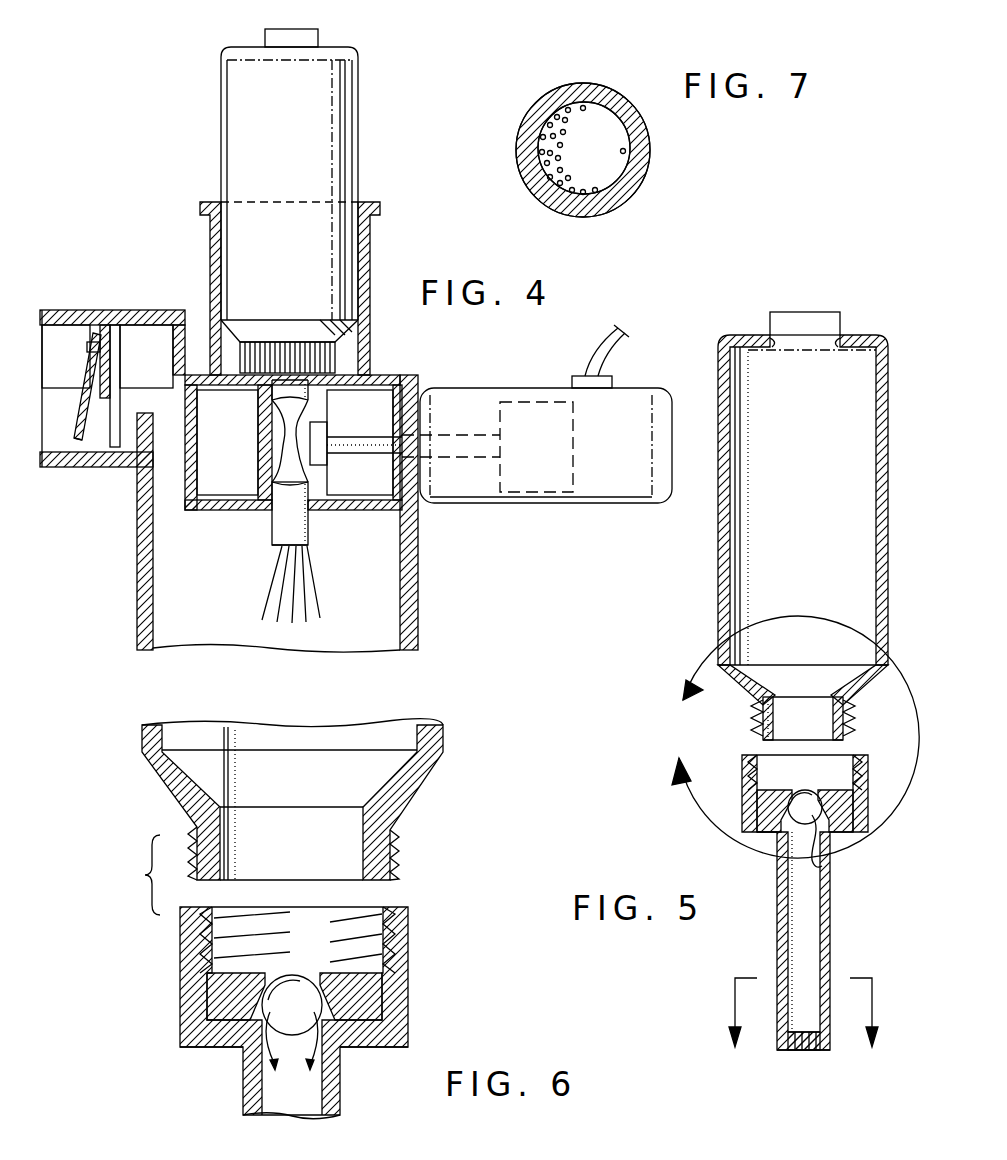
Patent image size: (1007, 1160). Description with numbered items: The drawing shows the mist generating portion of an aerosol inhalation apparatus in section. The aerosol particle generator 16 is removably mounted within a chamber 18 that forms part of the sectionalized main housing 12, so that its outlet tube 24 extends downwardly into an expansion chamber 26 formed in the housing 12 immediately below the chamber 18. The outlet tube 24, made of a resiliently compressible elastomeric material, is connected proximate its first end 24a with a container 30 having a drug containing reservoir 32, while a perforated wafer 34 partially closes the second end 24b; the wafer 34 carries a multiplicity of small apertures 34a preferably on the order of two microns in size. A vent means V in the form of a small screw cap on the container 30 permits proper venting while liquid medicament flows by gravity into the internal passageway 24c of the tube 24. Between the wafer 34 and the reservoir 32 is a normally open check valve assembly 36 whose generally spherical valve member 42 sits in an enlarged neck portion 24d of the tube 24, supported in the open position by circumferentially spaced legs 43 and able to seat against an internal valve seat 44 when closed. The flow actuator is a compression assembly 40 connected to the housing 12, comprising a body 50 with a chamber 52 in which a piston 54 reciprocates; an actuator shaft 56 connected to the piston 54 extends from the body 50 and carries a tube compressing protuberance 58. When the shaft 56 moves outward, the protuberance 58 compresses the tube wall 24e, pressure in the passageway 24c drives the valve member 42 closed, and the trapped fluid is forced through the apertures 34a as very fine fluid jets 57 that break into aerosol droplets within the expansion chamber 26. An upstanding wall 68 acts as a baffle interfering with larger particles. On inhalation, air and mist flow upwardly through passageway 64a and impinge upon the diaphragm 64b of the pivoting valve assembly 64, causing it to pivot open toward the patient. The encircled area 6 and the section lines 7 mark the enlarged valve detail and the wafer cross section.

In FIG. 4, the main housing 12 is at (136, 266).
In FIG. 4, the aerosol particle generator 16 is at (213, 90).
In FIG. 5, the aerosol particle generator 16 is at (709, 601).
In FIG. 6, the aerosol particle generator 16 is at (153, 788).
In FIG. 4, the chamber 18 is at (232, 212).
In FIG. 4, the outlet tube 24 is at (316, 538).
In FIG. 7, the outlet tube 24 is at (660, 143).
In FIG. 5, the outlet tube 24 is at (765, 934).
In FIG. 6, the outlet tube 24 is at (232, 1093).
In FIG. 4, the first end 24a is at (282, 400).
In FIG. 5, the first end 24a is at (775, 831).
In FIG. 6, the first end 24a is at (352, 1042).
In FIG. 4, the second end 24b is at (272, 533).
In FIG. 7, the second end 24b is at (651, 172).
In FIG. 5, the second end 24b is at (778, 1035).
In FIG. 4, the internal passageway 24c is at (296, 463).
In FIG. 5, the internal passageway 24c is at (820, 950).
In FIG. 6, the internal passageway 24c is at (312, 1098).
In FIG. 5, the enlarged neck portion 24d is at (832, 812).
In FIG. 6, the enlarged neck portion 24d is at (332, 992).
In FIG. 4, the tube wall 24e is at (266, 425).
In FIG. 5, the tube wall 24e is at (831, 912).
In FIG. 4, the expansion chamber 26 is at (398, 612).
In FIG. 4, the container 30 is at (226, 128).
In FIG. 5, the container 30 is at (720, 572).
In FIG. 6, the container 30 is at (445, 739).
In FIG. 5, the reservoir 32 is at (788, 632).
In FIG. 7, the perforated wafer 34 is at (606, 127).
In FIG. 5, the perforated wafer 34 is at (802, 1052).
In FIG. 7, the apertures 34a is at (560, 183).
In FIG. 5, the check valve assembly 36 is at (811, 786).
In FIG. 6, the check valve assembly 36 is at (302, 969).
In FIG. 4, the compression assembly 40 is at (474, 375).
In FIG. 5, the valve member 42 is at (800, 812).
In FIG. 6, the valve member 42 is at (286, 1095).
In FIG. 5, the legs 43 is at (818, 850).
In FIG. 6, the legs 43 is at (250, 1025).
In FIG. 5, the internal valve seat 44 is at (797, 805).
In FIG. 6, the internal valve seat 44 is at (278, 985).
In FIG. 4, the body 50 is at (565, 512).
In FIG. 4, the chamber 52 is at (466, 476).
In FIG. 4, the piston 54 is at (576, 451).
In FIG. 4, the actuator shaft 56 is at (351, 455).
In FIG. 4, the fluid jets 57 is at (278, 595).
In FIG. 4, the tube compressing protuberance 58 is at (319, 432).
In FIG. 4, the pivoting valve assembly 64 is at (81, 375).
In FIG. 4, the passageway 64a is at (107, 378).
In FIG. 4, the diaphragm 64b is at (73, 442).
In FIG. 4, the upstanding wall 68 is at (144, 420).
In FIG. 5, the section line 6 is at (793, 737).
In FIG. 5, the section line 7 is at (805, 1003).
In FIG. 4, the vent means V is at (318, 38).
In FIG. 5, the vent means V is at (796, 313).